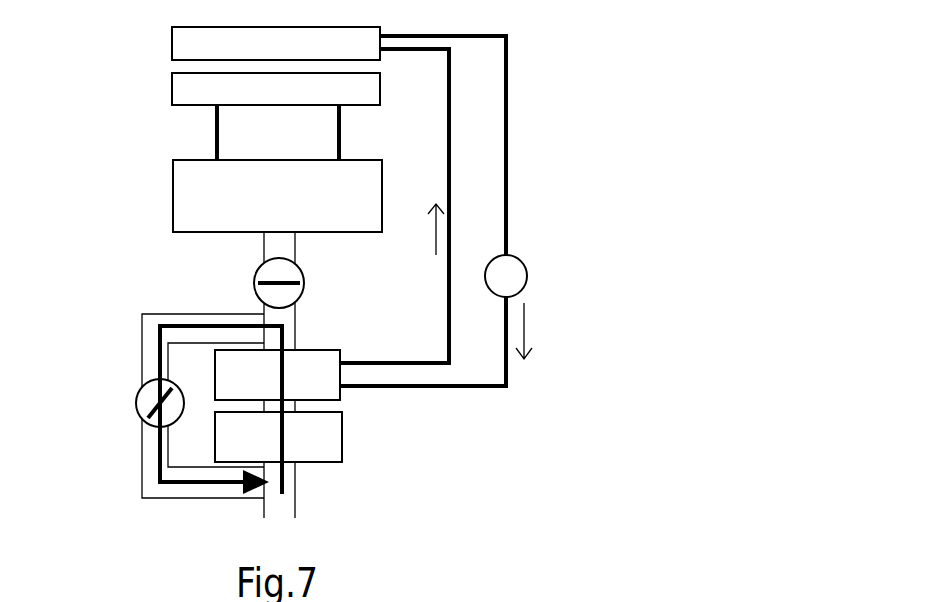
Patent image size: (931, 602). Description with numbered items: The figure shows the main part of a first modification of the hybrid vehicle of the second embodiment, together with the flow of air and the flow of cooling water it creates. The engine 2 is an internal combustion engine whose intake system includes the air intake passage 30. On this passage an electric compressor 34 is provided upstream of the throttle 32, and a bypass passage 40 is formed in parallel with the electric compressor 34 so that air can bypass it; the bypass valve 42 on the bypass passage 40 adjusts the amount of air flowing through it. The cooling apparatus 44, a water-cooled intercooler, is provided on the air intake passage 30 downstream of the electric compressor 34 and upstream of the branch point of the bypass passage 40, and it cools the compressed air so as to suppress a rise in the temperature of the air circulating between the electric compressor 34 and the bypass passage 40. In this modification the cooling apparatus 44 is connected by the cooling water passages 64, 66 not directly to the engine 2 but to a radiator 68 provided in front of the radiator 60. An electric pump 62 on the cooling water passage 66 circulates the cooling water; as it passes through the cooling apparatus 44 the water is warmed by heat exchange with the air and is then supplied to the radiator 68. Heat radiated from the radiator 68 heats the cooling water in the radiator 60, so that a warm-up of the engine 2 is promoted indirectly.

The engine 2 is at (173, 193).
The air intake passage 30 is at (297, 493).
The throttle 32 is at (256, 281).
The electric compressor 34 is at (342, 420).
The bypass passage 40 is at (142, 353).
The bypass valve 42 is at (136, 404).
The cooling apparatus 44 is at (312, 350).
The radiator 60 is at (172, 80).
The electric pump 62 is at (527, 272).
The cooling water passage 64 is at (447, 272).
The cooling water passage 66 is at (508, 207).
The radiator 68 is at (172, 34).